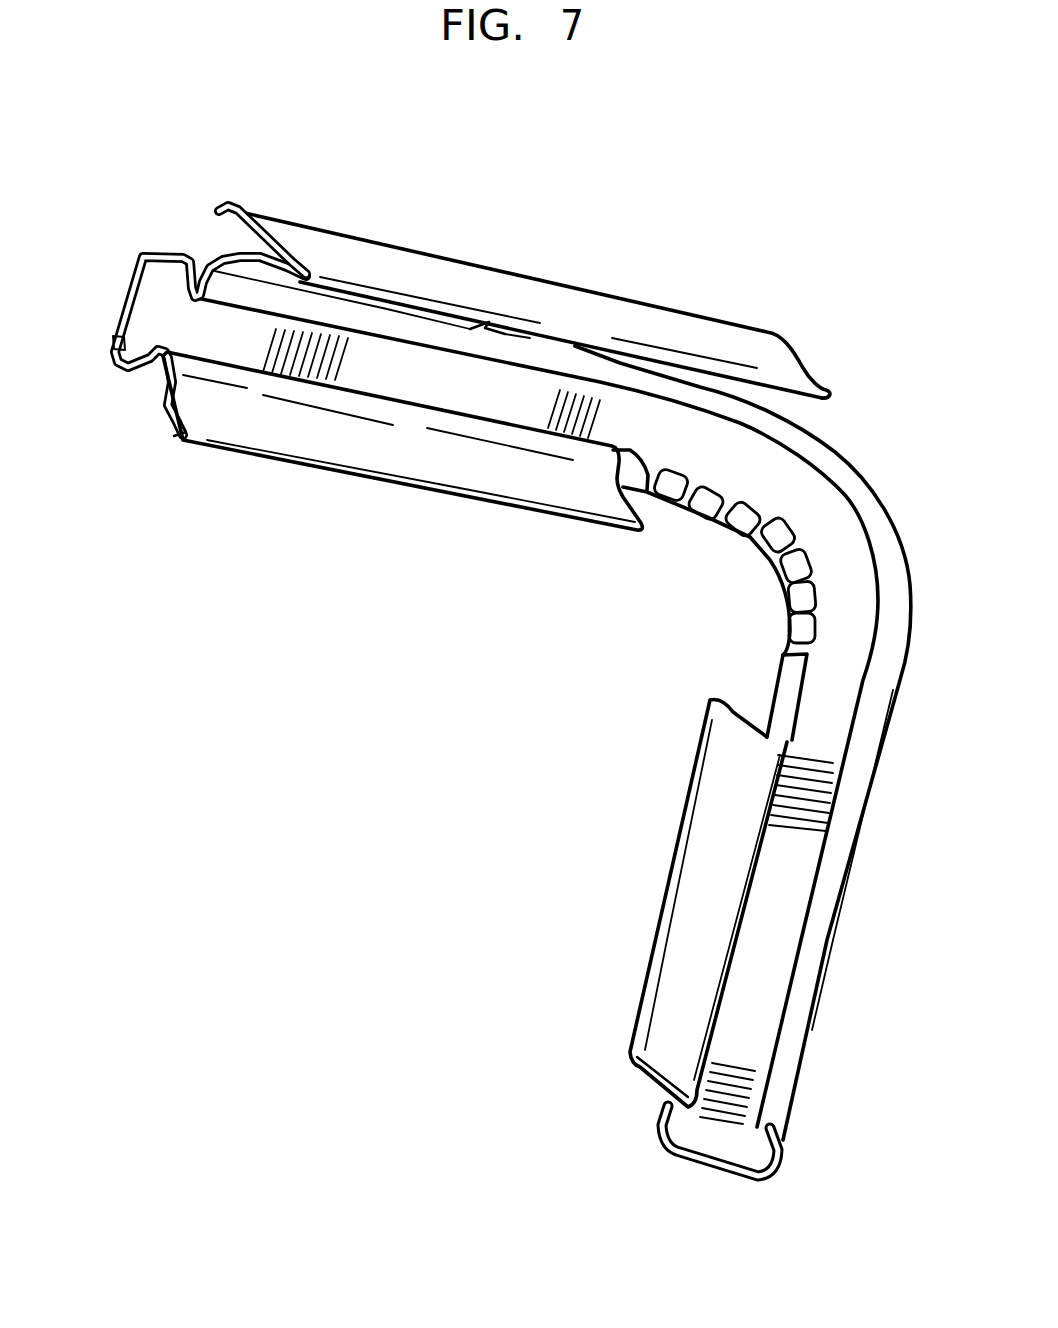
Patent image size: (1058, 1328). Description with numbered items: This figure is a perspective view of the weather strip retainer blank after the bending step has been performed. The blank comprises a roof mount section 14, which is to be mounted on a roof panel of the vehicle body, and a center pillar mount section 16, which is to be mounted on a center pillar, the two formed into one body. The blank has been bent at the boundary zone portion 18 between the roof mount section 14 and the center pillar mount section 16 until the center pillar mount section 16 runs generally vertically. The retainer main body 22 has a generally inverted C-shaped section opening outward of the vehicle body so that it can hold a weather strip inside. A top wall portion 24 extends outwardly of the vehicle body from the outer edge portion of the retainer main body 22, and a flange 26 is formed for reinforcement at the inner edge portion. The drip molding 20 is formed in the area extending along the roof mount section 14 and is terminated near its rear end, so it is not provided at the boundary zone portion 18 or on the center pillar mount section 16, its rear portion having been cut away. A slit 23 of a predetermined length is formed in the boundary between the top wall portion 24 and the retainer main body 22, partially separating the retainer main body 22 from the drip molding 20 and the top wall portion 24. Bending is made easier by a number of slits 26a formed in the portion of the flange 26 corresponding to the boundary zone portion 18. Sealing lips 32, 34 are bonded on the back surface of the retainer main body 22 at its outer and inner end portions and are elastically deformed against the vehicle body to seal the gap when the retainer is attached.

The roof mount section 14 is at (557, 275).
The center pillar mount section 16 is at (845, 937).
The boundary zone portion 18 is at (645, 556).
The drip molding 20 is at (345, 264).
The retainer main body 22 is at (146, 306).
The slit 23 is at (506, 338).
The top wall portion 24 is at (838, 455).
The flange 26 is at (285, 430).
The slits 26a is at (780, 548).
The sealing lip 32 is at (147, 259).
The sealing lip 34 is at (113, 355).